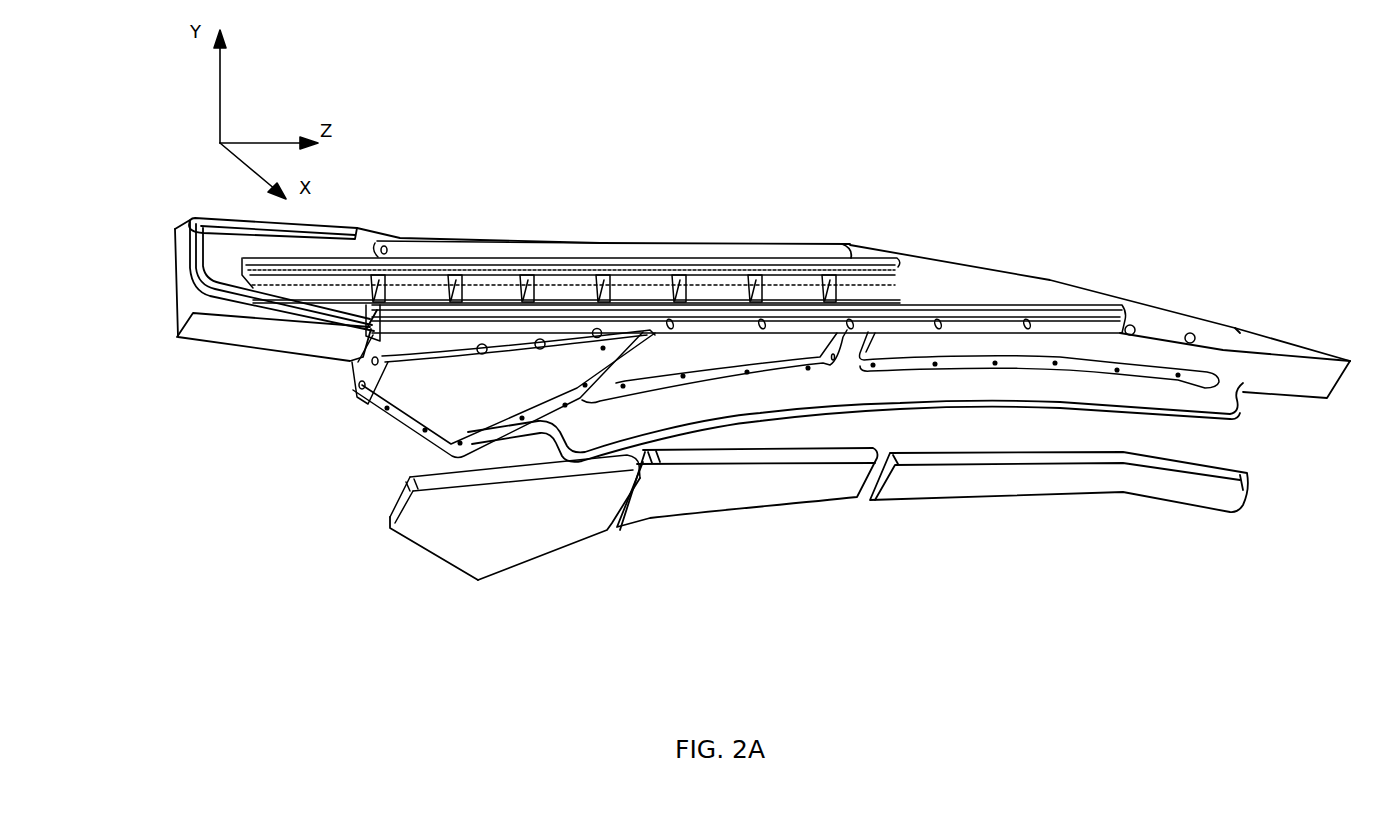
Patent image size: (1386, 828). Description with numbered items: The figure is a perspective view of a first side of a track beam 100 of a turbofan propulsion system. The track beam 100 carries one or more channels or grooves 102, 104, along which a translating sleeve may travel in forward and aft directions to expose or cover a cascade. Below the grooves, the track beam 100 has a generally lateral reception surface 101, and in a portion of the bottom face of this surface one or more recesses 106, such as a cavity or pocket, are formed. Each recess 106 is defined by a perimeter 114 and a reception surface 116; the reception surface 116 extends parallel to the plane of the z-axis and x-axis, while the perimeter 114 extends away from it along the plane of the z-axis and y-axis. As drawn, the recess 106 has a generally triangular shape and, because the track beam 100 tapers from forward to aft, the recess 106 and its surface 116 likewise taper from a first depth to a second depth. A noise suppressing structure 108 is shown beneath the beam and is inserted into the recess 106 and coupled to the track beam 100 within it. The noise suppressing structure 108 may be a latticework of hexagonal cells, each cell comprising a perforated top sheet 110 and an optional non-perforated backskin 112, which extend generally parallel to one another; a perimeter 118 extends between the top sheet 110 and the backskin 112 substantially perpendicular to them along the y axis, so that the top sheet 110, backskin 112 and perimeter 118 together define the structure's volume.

The track beam 100 is at (617, 242).
The generally lateral reception surface 101 is at (1292, 397).
The groove 102 is at (782, 255).
The groove 104 is at (960, 300).
The recess 106 is at (443, 402).
The noise suppressing structure 108 is at (484, 598).
The perforated top sheet 110 is at (418, 550).
The non-perforated backskin 112 is at (505, 385).
The perimeter 114 is at (383, 415).
The reception surface 116 is at (517, 472).
The perimeter 118 is at (392, 513).